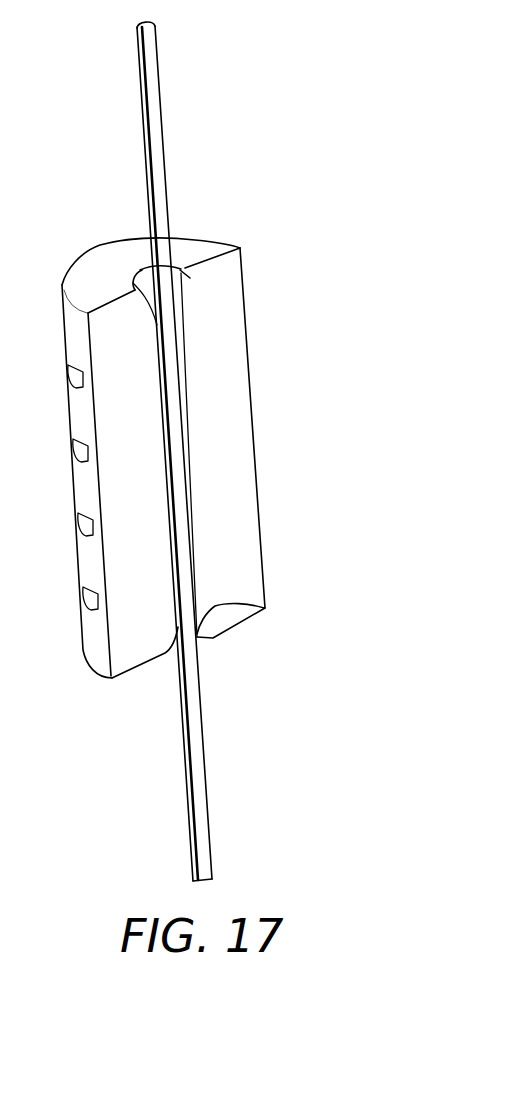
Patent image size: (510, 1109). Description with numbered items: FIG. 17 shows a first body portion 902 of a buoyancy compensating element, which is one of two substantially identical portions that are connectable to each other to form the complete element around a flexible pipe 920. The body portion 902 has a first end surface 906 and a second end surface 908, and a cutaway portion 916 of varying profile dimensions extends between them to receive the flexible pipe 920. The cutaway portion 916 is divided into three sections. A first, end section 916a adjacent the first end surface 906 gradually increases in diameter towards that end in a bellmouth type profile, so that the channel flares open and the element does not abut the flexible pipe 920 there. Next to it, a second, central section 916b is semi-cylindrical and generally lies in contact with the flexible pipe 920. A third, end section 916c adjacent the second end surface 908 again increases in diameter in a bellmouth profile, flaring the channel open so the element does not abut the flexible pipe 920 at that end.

The first body portion 902 is at (237, 233).
The first end surface 906 is at (183, 240).
The second end surface 908 is at (243, 627).
The cutaway portion 916 is at (137, 275).
The first end section 916a is at (190, 278).
The second central section 916b is at (186, 465).
The third end section 916c is at (264, 604).
The flexible pipe 920 is at (160, 60).